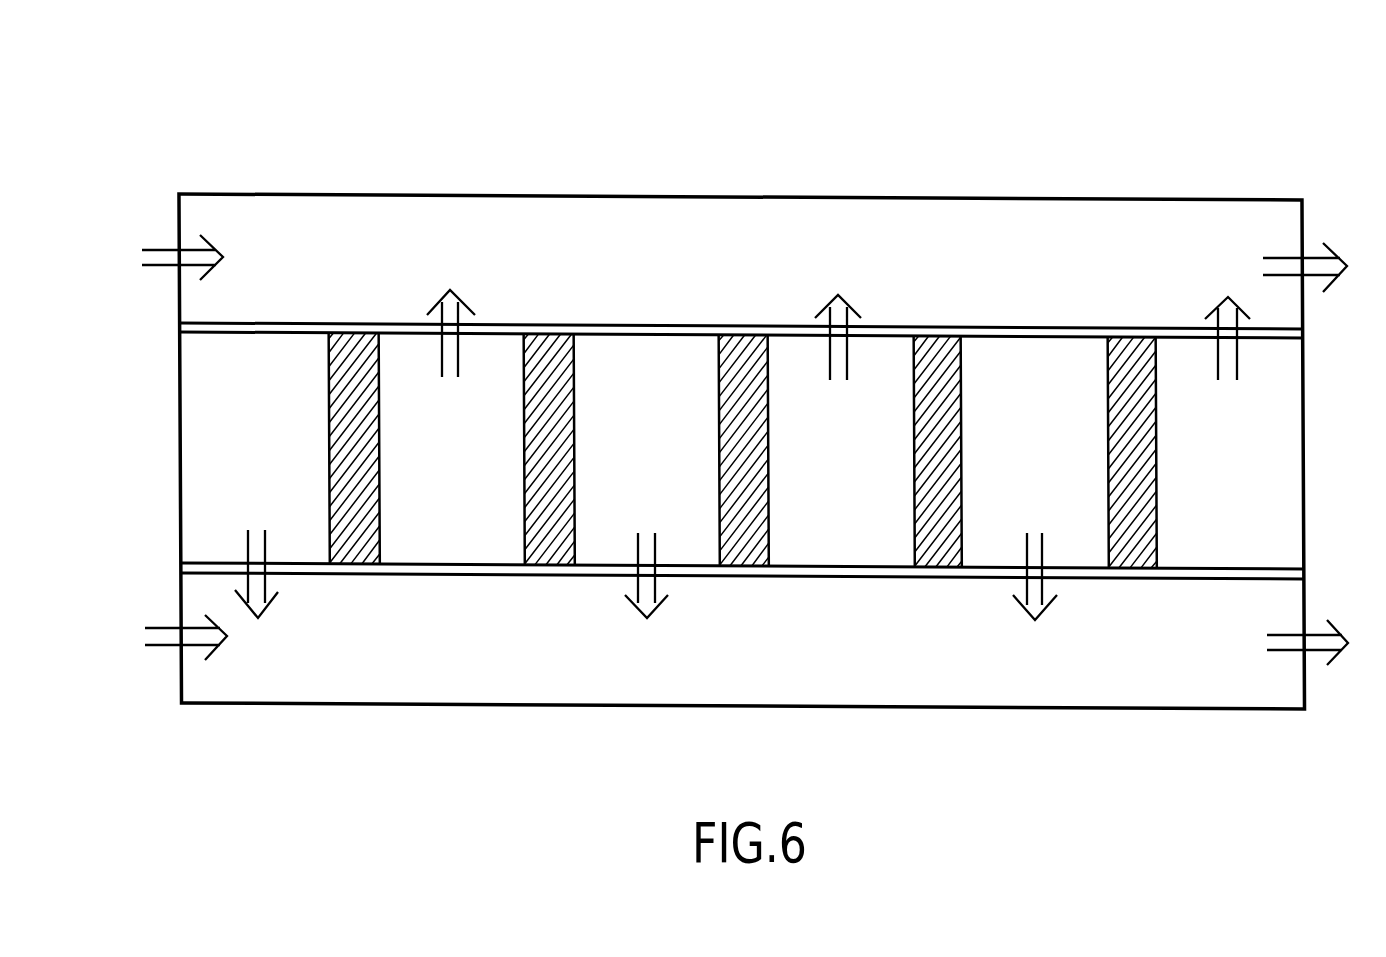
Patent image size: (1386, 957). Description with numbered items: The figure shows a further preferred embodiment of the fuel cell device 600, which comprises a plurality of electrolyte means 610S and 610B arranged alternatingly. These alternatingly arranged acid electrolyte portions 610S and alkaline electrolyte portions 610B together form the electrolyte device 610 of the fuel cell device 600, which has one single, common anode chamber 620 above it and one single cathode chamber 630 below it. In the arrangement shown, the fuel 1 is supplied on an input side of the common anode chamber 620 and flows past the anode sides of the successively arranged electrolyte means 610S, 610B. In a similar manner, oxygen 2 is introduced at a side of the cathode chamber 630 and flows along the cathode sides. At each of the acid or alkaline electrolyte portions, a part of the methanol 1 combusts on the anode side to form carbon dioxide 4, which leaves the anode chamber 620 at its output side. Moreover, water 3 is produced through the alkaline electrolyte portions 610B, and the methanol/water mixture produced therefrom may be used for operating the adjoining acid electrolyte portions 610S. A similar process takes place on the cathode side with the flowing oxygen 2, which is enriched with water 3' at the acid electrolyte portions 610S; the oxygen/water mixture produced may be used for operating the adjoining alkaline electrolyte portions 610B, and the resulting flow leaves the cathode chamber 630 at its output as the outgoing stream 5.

The fuel cell device 600 is at (182, 130).
The electrolyte device 610 is at (176, 456).
The acid electrolyte portion 610S is at (1063, 465).
The alkaline electrolyte portion 610B is at (1260, 466).
The anode chamber 620 is at (176, 307).
The cathode chamber 630 is at (176, 585).
The fuel 1 is at (170, 257).
The oxygen 2 is at (172, 637).
The water 3 is at (827, 329).
The water 3' is at (658, 583).
The carbon dioxide 4 is at (1319, 267).
The second fluid outlet flow 5 is at (1321, 642).